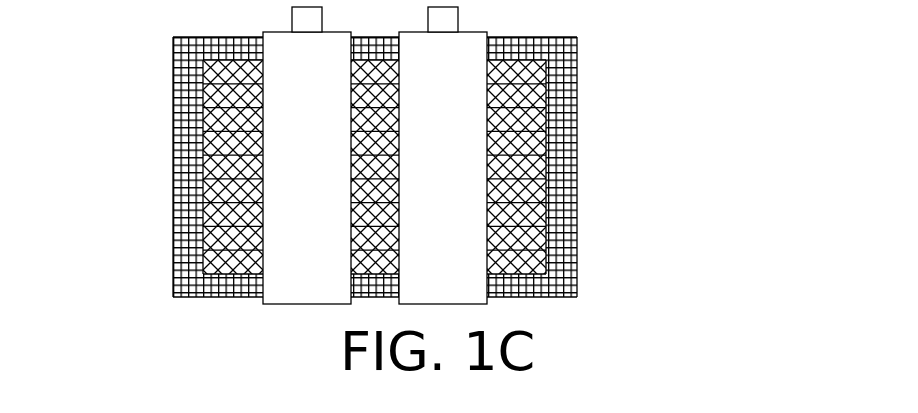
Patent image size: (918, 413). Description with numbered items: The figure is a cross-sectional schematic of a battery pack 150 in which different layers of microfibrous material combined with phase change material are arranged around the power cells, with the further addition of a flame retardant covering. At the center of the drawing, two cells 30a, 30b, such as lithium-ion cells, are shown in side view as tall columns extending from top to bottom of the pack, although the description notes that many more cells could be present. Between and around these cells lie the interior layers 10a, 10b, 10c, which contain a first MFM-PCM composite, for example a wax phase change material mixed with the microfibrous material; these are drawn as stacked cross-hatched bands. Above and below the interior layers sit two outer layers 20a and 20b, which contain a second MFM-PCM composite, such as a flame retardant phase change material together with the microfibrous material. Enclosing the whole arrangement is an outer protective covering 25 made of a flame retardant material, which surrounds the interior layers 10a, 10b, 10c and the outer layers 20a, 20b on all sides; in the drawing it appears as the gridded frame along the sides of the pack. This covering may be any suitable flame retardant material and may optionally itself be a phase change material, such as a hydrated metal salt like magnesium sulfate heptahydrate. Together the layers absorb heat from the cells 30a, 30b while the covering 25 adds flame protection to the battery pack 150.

The battery pack 150 is at (434, 185).
The interior layer 10a is at (546, 72).
The interior layer 10b is at (546, 98).
The interior layer 10c is at (546, 122).
The outer layer 20a is at (545, 50).
The outer layer 20b is at (532, 287).
The outer protective covering 25 is at (173, 163).
The cell 30a is at (330, 140).
The cell 30b is at (465, 140).